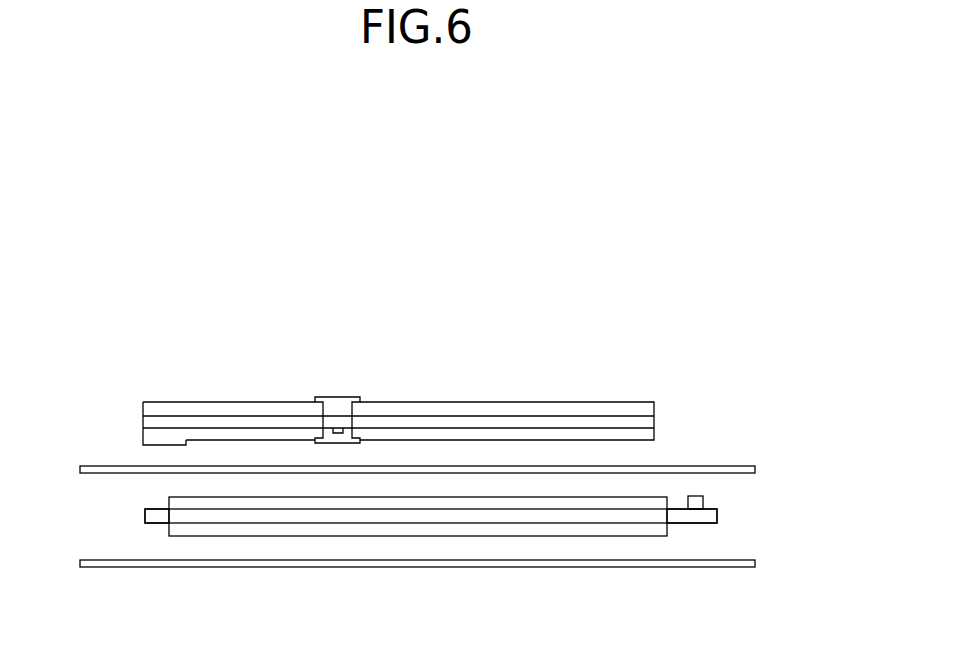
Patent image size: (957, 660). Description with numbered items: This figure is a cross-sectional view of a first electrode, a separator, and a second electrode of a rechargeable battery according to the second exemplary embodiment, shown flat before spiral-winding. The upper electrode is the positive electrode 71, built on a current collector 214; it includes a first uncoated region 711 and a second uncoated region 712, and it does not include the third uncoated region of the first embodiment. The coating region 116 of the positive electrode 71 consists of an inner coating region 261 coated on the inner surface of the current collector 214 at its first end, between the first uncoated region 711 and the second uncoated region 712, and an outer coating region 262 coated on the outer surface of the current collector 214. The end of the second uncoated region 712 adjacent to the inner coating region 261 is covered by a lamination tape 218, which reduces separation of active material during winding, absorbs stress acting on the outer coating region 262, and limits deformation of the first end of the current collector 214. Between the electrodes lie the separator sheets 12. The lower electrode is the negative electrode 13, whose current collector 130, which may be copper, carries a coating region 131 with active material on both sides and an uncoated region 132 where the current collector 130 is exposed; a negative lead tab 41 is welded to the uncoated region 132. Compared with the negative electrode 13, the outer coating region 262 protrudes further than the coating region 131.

The positive electrode 71 is at (399, 382).
The first uncoated region 711 is at (352, 436).
The second uncoated region 712 is at (153, 436).
The lamination tape 218 is at (162, 440).
The current collector 214 is at (540, 420).
The coating region 116 is at (248, 349).
The inner coating region 261 is at (237, 437).
The outer coating region 262 is at (187, 408).
The plate 12 is at (80, 469).
The negative electrode 13 is at (430, 549).
The current collector 130 is at (527, 515).
The coating region 131 is at (447, 502).
The uncoated region 132 is at (158, 515).
The negative lead tab 41 is at (697, 502).